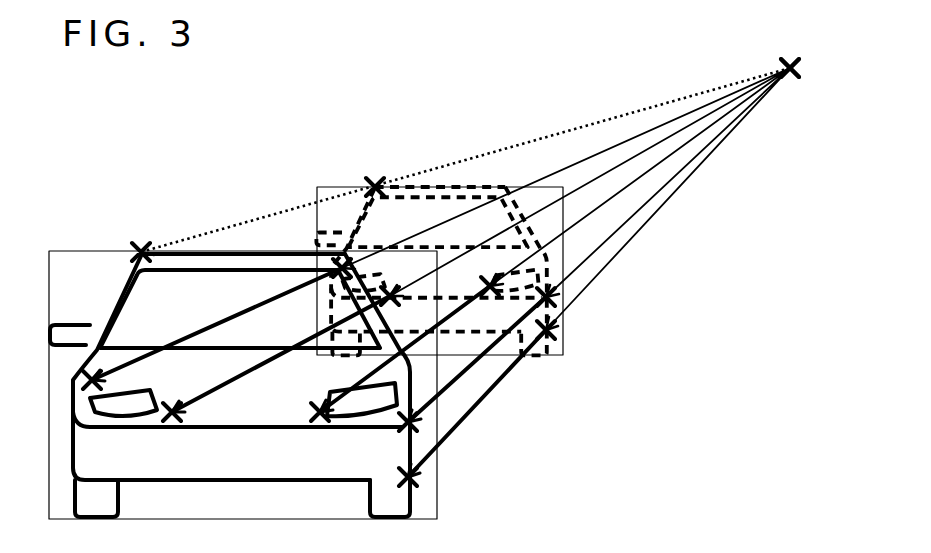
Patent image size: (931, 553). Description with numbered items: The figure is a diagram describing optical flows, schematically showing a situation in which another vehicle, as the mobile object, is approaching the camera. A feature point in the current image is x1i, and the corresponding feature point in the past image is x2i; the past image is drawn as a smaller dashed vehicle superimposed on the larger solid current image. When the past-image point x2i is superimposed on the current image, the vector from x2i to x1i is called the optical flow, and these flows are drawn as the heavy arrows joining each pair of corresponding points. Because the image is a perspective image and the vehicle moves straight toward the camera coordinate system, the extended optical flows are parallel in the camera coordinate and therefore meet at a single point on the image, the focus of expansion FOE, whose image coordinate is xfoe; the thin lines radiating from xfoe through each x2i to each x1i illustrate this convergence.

The focus of expansion FOE is at (785, 54).
The coordinate of the focus of expansion xfoe is at (811, 84).
The feature point in the current image x1i is at (393, 374).
The feature point in the past image x2i is at (487, 301).